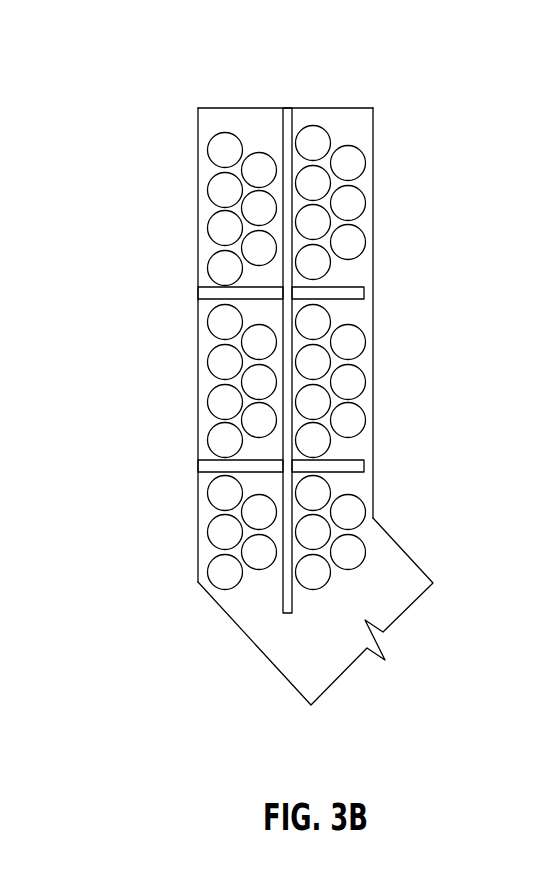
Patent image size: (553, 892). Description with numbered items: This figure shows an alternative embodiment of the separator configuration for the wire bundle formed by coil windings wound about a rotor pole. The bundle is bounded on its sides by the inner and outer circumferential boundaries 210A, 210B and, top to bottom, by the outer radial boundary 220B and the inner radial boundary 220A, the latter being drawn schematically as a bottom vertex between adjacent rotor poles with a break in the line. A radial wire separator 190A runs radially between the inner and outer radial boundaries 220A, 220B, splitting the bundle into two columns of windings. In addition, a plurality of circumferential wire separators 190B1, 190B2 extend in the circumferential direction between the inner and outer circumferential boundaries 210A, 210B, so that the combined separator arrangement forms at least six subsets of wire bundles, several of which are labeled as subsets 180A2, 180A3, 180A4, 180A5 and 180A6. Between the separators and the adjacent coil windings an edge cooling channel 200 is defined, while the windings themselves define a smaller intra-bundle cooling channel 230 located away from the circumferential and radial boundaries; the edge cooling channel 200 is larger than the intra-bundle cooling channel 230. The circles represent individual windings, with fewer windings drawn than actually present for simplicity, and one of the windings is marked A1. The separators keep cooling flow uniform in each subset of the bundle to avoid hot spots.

The outer radial boundary 220B is at (223, 108).
The subset of wire bundles 180A4 is at (197, 127).
The outer circumferential boundary 210B is at (198, 368).
The inner circumferential boundary 210A is at (368, 392).
The inner radial boundary 220A is at (343, 645).
The radial wire separator 190A is at (280, 606).
The circumferential wire separator 190B1 is at (348, 287).
The circumferential wire separator 190B2 is at (345, 480).
The edge cooling channel 200 is at (250, 449).
The intra-bundle cooling channel 230 is at (245, 233).
The subset of wire bundles 180A5 is at (213, 322).
The subset of wire bundles 180A6 is at (225, 532).
The first region A1 is at (352, 162).
The subset of wire bundles 180A2 is at (335, 348).
The subset of wire bundles 180A3 is at (350, 482).